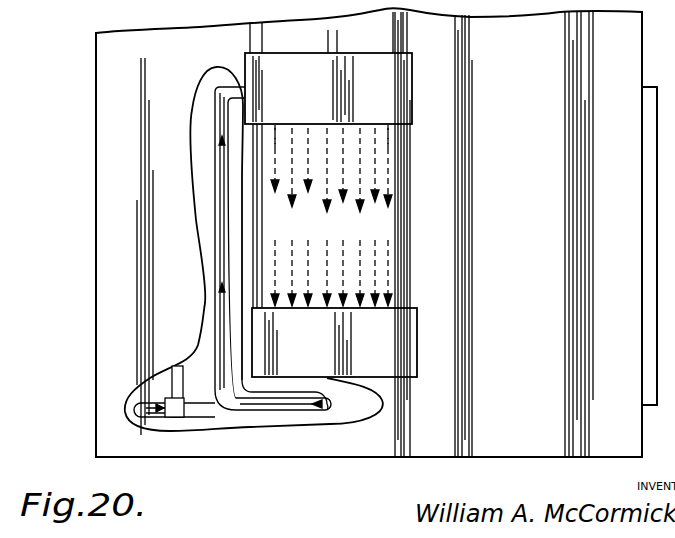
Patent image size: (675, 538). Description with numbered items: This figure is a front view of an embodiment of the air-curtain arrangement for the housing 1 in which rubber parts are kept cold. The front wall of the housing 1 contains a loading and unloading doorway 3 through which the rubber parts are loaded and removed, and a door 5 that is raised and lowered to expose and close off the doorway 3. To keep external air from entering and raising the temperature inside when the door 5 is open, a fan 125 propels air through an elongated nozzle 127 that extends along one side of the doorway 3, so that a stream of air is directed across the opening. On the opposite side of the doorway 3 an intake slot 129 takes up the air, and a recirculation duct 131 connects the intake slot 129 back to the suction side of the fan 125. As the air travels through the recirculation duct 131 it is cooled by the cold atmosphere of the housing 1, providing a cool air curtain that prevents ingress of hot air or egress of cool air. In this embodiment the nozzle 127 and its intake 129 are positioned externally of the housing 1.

The housing 1 is at (632, 58).
The loading and unloading doorway 3 is at (273, 127).
The door 5 is at (382, 128).
The fan 125 is at (178, 366).
The elongated nozzle 127 is at (392, 68).
The intake slot 129 is at (403, 377).
The recirculation duct 131 is at (161, 406).